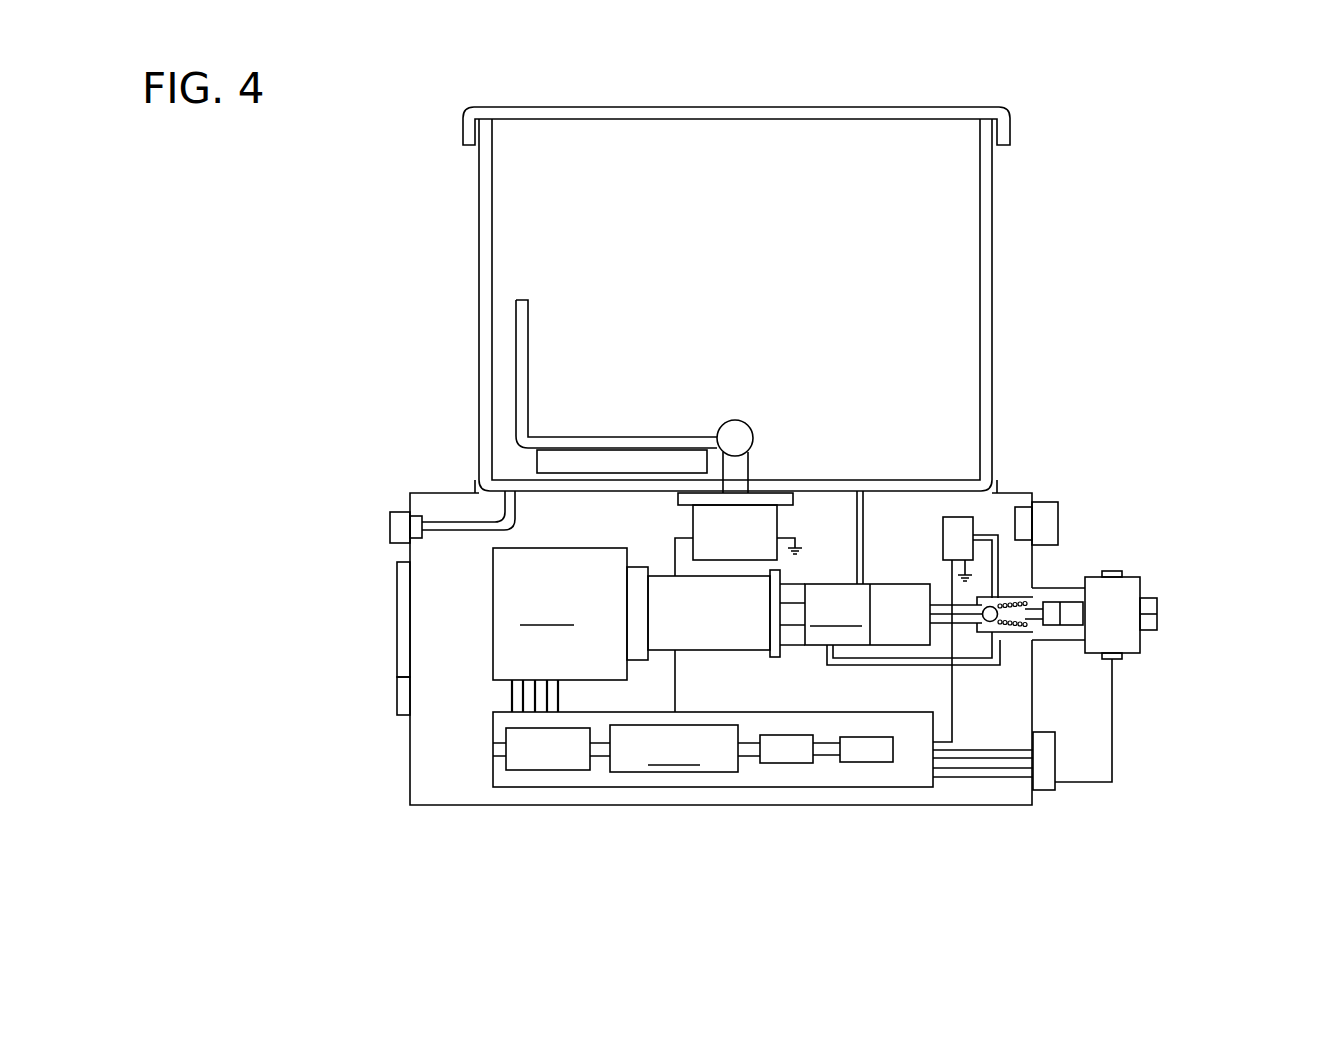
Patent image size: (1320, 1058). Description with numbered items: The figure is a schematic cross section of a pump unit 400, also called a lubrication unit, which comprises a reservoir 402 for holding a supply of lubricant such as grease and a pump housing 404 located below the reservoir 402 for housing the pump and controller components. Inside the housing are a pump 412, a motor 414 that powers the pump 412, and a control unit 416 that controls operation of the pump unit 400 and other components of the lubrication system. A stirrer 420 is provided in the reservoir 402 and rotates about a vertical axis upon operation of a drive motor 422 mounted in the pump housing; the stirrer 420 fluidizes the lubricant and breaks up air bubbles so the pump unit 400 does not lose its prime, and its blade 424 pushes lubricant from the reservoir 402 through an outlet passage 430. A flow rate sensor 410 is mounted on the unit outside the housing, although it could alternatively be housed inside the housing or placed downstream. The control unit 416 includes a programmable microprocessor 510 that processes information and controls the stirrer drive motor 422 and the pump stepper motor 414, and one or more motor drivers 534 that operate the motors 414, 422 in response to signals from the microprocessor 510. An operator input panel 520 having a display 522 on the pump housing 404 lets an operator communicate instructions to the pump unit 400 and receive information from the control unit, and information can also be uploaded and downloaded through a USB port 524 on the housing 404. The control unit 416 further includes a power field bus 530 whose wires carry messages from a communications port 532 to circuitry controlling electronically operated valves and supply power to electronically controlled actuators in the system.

The pump unit 400 is at (1128, 128).
The reservoir 402 is at (995, 280).
The pump housing 404 is at (408, 740).
The flow rate sensor 410 is at (1132, 575).
The pump 412 is at (890, 624).
The motor 414 is at (636, 630).
The control unit 416 is at (663, 787).
The stirrer 420 is at (534, 352).
The drive motor 422 is at (690, 520).
The blade 424 is at (537, 463).
The passage 430 is at (867, 523).
The programmable microprocessor 510 is at (674, 748).
The operator input panel 520 is at (395, 697).
The display 522 is at (395, 592).
The USB port 524 is at (1065, 742).
The power field bus 530 is at (790, 763).
The communications port 532 is at (872, 762).
The motor driver 534 is at (552, 770).